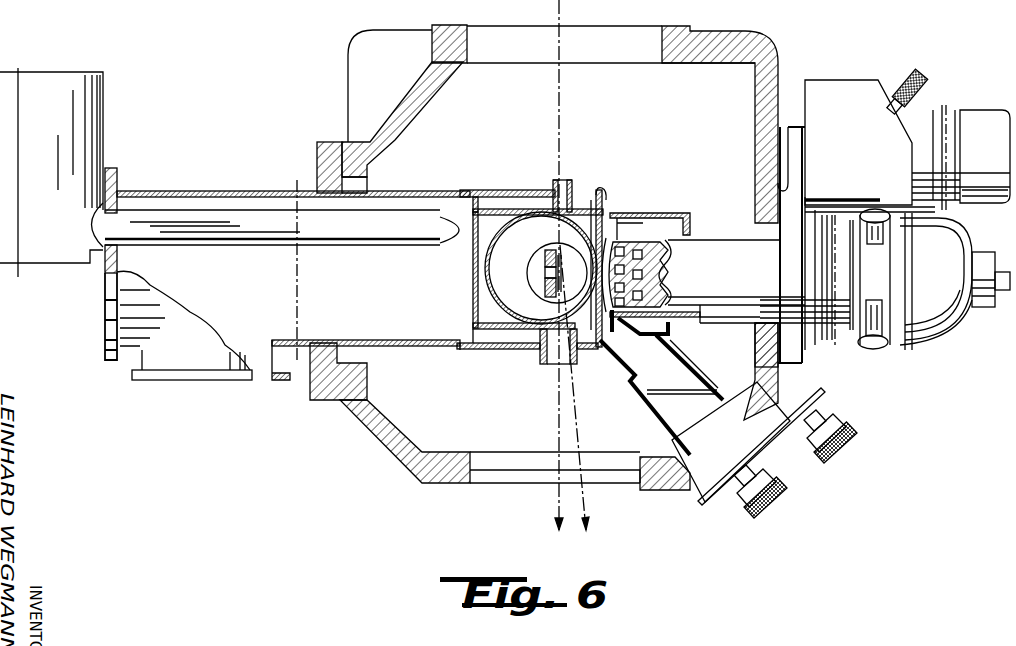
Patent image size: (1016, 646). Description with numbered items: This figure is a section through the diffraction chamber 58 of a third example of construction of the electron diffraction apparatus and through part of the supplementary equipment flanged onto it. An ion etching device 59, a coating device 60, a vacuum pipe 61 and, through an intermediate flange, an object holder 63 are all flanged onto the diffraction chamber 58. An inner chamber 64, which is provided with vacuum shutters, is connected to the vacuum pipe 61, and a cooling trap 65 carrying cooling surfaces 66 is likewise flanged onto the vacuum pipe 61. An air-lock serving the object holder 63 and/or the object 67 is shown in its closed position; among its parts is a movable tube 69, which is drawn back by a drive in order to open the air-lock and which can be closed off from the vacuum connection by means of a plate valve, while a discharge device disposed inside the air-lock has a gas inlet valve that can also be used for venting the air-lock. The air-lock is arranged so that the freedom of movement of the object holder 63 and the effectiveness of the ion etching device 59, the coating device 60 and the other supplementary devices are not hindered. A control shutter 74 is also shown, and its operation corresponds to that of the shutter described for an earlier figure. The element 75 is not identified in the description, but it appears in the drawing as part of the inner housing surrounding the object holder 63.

The diffraction chamber 58 is at (773, 54).
The ion etching device 59 is at (790, 352).
The coating device 60 is at (742, 443).
The vacuum pipe 61 is at (408, 343).
The object holder 63 is at (541, 283).
The inner chamber 64 is at (530, 193).
The cooling trap 65 is at (230, 203).
The cooling surfaces 66 is at (490, 198).
The object 67 is at (560, 272).
The movable tube 69 is at (588, 190).
The control shutter 74 is at (606, 207).
The ring housing 75 is at (497, 273).